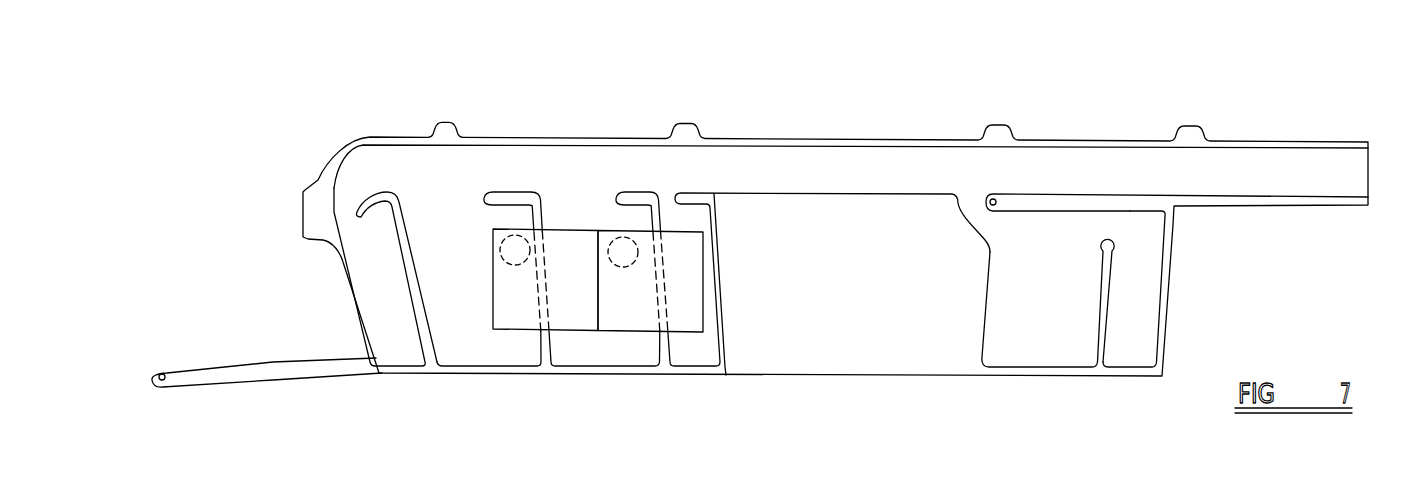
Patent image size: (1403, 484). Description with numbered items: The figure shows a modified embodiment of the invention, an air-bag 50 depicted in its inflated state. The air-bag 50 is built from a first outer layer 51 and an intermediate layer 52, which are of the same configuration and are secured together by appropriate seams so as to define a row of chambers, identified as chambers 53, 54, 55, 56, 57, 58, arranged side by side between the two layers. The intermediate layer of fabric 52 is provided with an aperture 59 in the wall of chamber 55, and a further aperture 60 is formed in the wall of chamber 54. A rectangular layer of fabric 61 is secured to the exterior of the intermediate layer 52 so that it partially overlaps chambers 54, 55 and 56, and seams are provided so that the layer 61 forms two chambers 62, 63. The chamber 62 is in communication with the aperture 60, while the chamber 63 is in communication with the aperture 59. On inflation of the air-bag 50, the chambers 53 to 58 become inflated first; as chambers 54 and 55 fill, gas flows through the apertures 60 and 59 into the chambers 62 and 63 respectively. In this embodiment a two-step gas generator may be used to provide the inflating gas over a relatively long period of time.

The air-bag 50 is at (820, 127).
The first outer layer 51 is at (1228, 127).
The intermediate layer 52 is at (1128, 288).
The chamber 53 is at (398, 340).
The chamber 54 is at (488, 345).
The chamber 55 is at (605, 343).
The chamber 56 is at (697, 345).
The chamber 57 is at (1043, 320).
The chamber 58 is at (1133, 337).
The aperture 59 is at (620, 238).
The further aperture 60 is at (503, 243).
The rectangular layer of fabric 61 is at (629, 253).
The chamber 62 is at (567, 333).
The chamber 63 is at (633, 337).